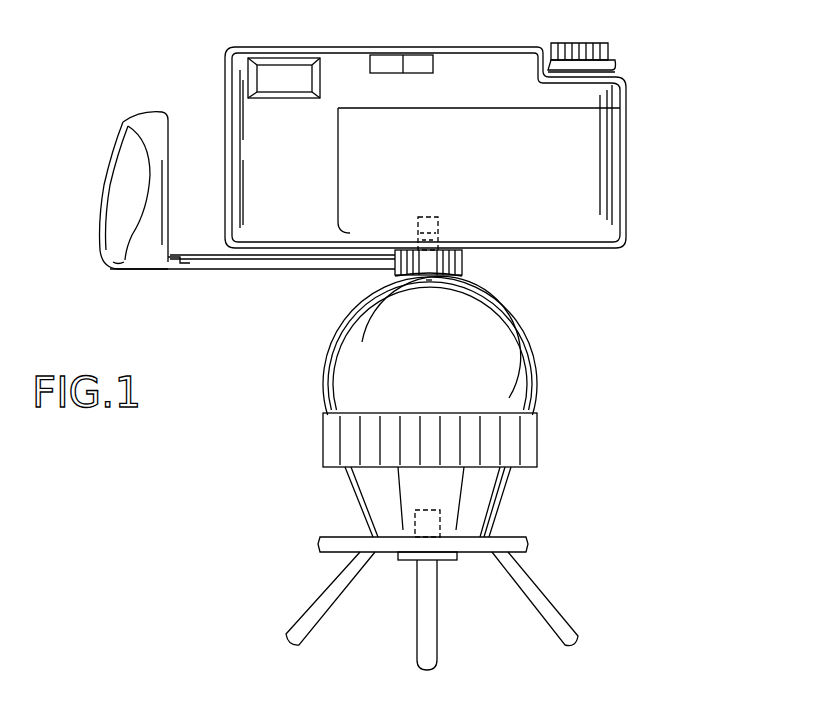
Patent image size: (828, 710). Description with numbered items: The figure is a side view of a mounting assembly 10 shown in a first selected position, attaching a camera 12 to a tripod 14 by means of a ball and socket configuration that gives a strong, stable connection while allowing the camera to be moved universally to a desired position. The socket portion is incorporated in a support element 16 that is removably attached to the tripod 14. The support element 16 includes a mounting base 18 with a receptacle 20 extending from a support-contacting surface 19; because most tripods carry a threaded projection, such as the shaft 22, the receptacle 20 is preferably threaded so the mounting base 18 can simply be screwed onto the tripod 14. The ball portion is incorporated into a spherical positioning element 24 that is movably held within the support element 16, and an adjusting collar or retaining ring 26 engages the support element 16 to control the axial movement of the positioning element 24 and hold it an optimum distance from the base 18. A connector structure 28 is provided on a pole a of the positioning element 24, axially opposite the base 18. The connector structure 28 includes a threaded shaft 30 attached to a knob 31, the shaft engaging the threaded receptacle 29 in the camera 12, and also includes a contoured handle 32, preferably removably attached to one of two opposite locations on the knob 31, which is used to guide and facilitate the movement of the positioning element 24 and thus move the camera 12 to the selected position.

The mounting assembly 10 is at (298, 393).
The camera 12 is at (630, 164).
The tripod 14 is at (560, 587).
The support element 16 is at (512, 490).
The mounting base 18 is at (373, 510).
The support-contacting surface 19 is at (393, 537).
The receptacle 20 is at (425, 512).
The shaft 22 is at (440, 528).
The positioning element 24 is at (540, 346).
The retaining ring 26 is at (542, 437).
The connector structure 28 is at (368, 289).
The threaded receptacle 29 is at (438, 226).
The threaded shaft 30 is at (438, 240).
The knob 31 is at (462, 269).
The handle 32 is at (121, 148).
The pole a is at (428, 285).